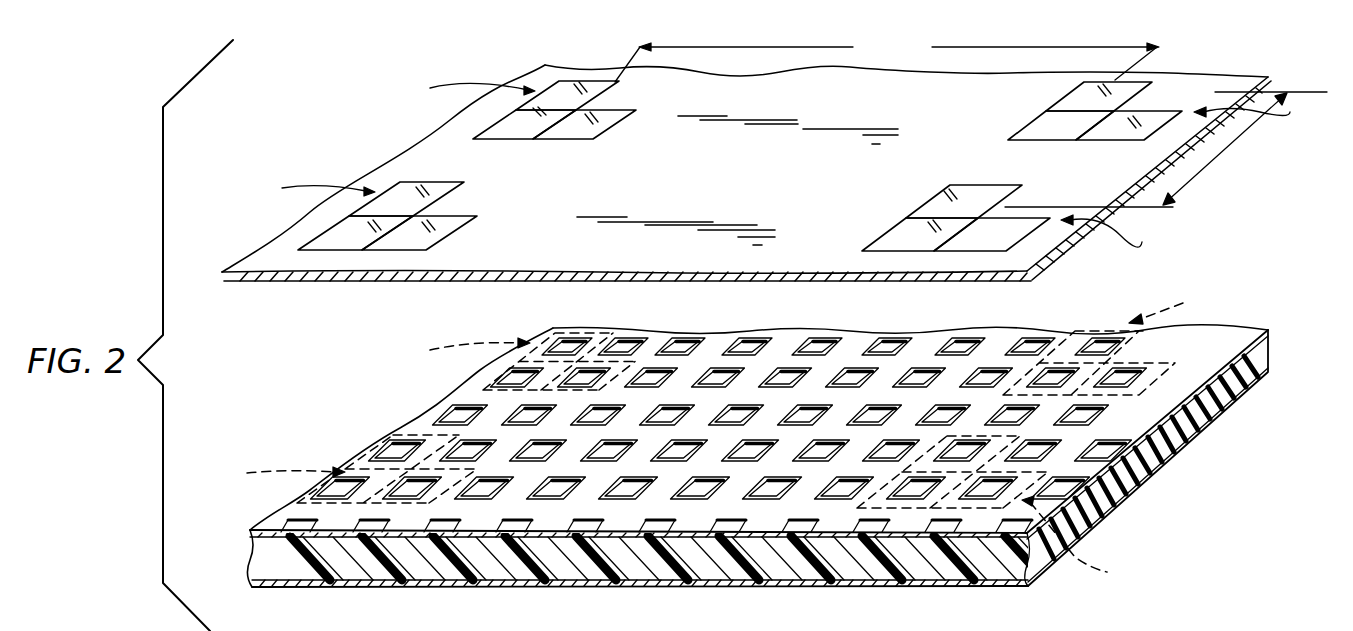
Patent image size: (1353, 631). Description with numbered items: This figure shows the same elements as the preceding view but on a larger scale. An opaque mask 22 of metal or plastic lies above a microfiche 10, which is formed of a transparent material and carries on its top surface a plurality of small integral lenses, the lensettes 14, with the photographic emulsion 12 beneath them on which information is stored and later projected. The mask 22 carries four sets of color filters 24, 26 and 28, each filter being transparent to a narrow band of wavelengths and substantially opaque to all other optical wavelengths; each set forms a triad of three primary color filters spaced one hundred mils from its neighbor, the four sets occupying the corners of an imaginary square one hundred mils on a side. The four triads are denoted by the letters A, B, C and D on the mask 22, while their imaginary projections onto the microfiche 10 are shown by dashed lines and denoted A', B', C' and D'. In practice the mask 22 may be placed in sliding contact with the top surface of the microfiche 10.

The microfiche 10 is at (1187, 437).
The photographic emulsion 12 is at (1107, 520).
The lensettes 14 is at (1257, 380).
The opaque mask 22 is at (748, 188).
The color filter 24 is at (593, 91).
The color filter 26 is at (519, 139).
The color filter 28 is at (608, 126).